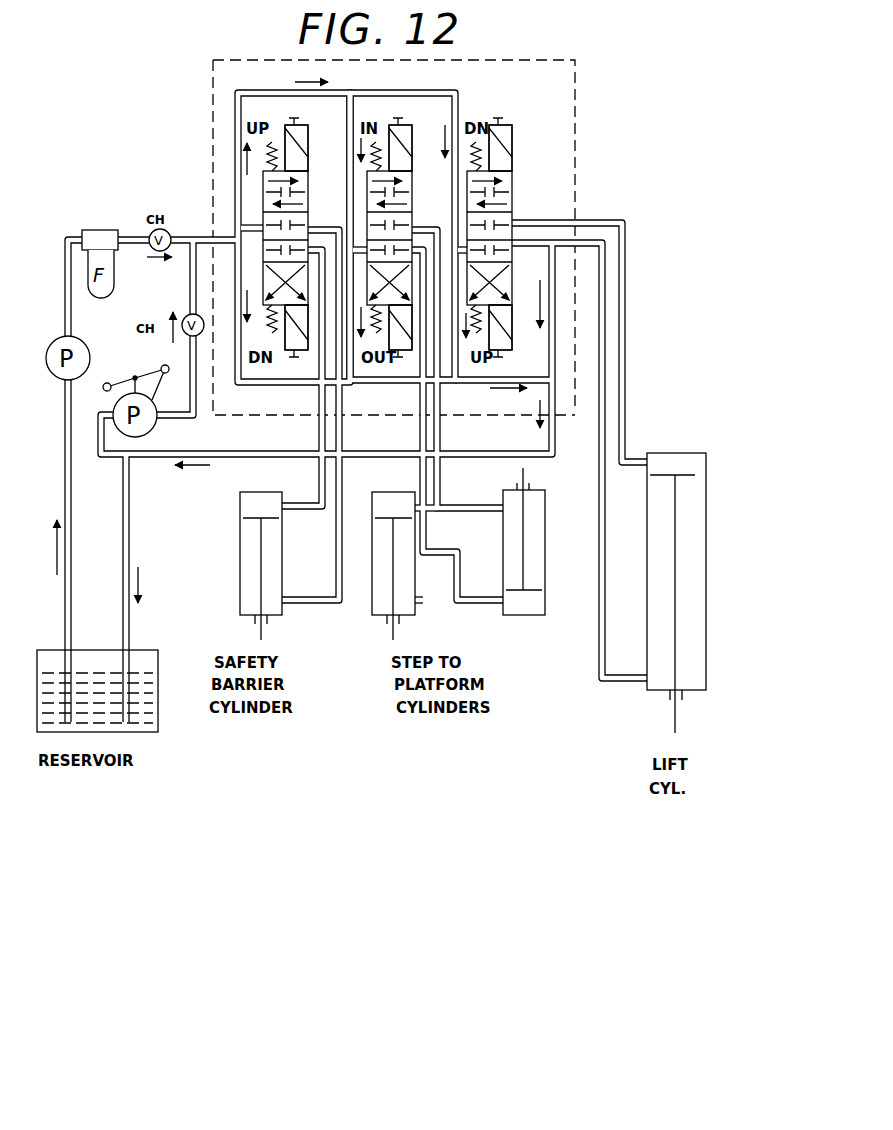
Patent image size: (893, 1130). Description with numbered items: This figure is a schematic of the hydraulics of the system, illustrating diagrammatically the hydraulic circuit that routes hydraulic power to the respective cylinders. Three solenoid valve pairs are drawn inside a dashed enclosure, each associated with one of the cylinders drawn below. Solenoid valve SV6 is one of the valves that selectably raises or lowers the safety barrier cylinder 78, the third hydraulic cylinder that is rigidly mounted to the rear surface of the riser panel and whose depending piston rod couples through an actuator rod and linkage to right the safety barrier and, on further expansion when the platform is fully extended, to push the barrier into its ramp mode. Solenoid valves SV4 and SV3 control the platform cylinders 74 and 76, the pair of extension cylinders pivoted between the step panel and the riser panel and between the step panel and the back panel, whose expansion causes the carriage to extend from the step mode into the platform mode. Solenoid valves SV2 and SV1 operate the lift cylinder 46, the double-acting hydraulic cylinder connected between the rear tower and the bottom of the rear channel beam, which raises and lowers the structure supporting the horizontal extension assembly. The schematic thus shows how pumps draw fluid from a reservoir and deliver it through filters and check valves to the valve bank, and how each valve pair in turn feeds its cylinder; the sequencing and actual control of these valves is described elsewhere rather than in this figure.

The safety barrier cylinder 78 is at (240, 587).
The extension cylinder 74 is at (372, 582).
The extension cylinder 76 is at (545, 536).
The double-acting hydraulic cylinder 46 is at (706, 536).
The solenoid valve SV1 is at (504, 358).
The solenoid valve SV2 is at (514, 132).
The solenoid valve SV3 is at (398, 353).
The solenoid valve SV4 is at (406, 136).
The solenoid valve SV6 is at (304, 137).